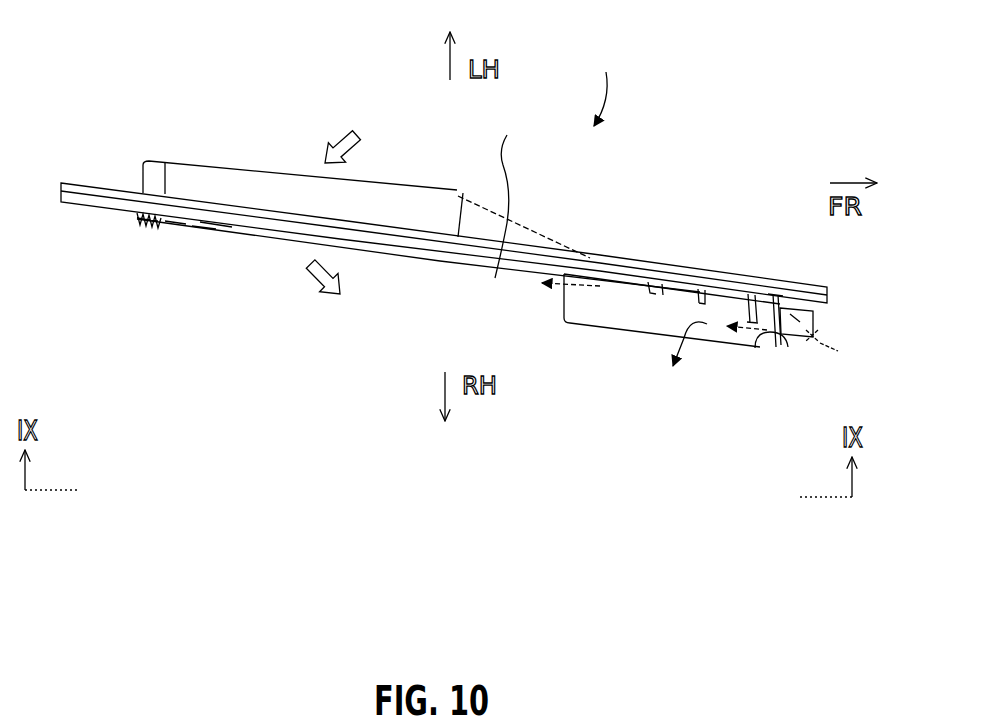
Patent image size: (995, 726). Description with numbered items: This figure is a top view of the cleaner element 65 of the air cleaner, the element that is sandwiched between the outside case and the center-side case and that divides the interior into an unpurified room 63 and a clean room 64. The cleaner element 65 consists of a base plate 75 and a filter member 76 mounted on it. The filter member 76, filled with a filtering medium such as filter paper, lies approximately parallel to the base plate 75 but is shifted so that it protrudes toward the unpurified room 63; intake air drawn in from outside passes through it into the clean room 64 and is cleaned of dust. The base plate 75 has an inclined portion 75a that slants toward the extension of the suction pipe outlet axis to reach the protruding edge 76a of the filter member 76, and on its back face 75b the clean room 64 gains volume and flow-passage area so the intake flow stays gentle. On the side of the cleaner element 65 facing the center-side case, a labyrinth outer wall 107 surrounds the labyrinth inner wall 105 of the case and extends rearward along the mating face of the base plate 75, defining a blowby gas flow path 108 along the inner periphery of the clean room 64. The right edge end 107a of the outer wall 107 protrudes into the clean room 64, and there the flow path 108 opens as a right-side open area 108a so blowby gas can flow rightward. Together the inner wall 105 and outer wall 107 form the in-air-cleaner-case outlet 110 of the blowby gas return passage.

The base plate 75 is at (100, 182).
The inclined portion 75a is at (524, 193).
The back face 75b is at (495, 265).
The filter member 76 is at (236, 162).
The protruding edge 76a is at (463, 193).
The cleaner element 65 is at (608, 84).
The unpurified room 63 is at (602, 218).
The clean room 64 is at (536, 337).
The blowby gas flow path 108 is at (612, 288).
The right-side open area 108a is at (630, 342).
The right edge end 107a is at (690, 337).
The labyrinth outer wall 107 is at (712, 335).
The in-air-cleaner-case outlet 110 is at (820, 321).
The labyrinth inner wall 105 is at (840, 349).